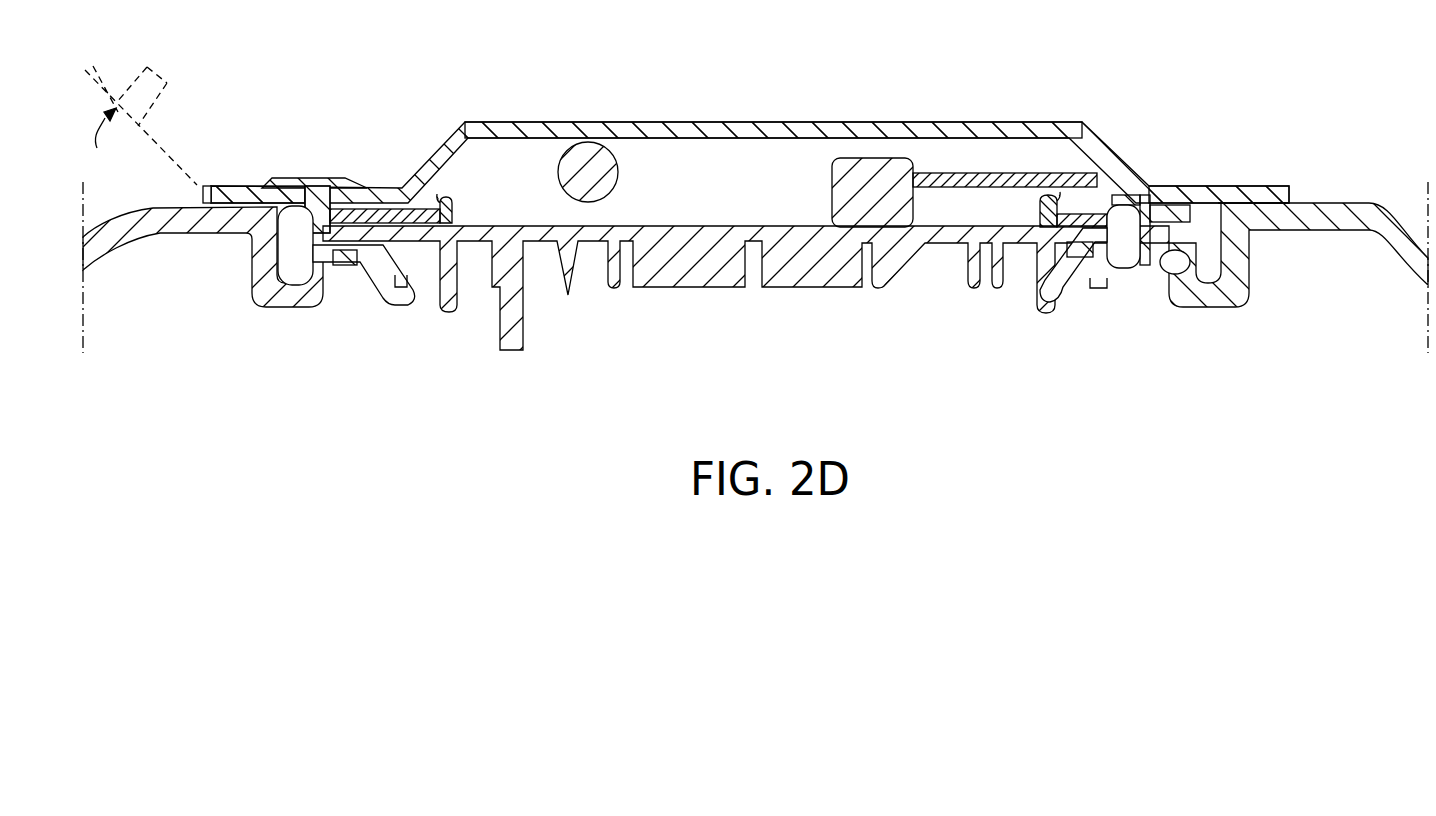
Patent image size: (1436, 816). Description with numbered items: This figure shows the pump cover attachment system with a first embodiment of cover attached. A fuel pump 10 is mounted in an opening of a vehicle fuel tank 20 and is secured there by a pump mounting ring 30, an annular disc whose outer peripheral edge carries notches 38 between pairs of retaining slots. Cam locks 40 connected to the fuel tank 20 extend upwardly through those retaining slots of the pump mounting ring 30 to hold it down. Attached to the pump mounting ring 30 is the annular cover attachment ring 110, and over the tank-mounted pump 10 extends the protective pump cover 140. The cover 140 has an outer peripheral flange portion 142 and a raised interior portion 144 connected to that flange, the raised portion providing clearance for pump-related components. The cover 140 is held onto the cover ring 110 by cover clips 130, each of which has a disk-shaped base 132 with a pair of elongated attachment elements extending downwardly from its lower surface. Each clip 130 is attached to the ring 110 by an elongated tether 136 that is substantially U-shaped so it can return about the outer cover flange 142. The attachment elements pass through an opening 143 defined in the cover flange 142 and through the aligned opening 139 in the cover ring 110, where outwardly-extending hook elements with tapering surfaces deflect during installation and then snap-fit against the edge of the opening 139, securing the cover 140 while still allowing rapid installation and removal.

The fuel pump 10 is at (676, 226).
The vehicle fuel tank 20 is at (1324, 203).
The pump mounting ring 30 is at (1196, 213).
The notch 38 is at (342, 263).
The cam lock 40 is at (1116, 195).
The annular ring 110 is at (355, 188).
The cover clip 130 is at (134, 125).
The disk-shaped base 132 is at (145, 137).
The elongated tether 136 is at (205, 186).
The opening 139 is at (262, 258).
The protective pump cover 140 is at (780, 121).
The outer peripheral flange portion 142 is at (235, 186).
The opening 143 is at (323, 178).
The raised interior portion 144 is at (1010, 130).